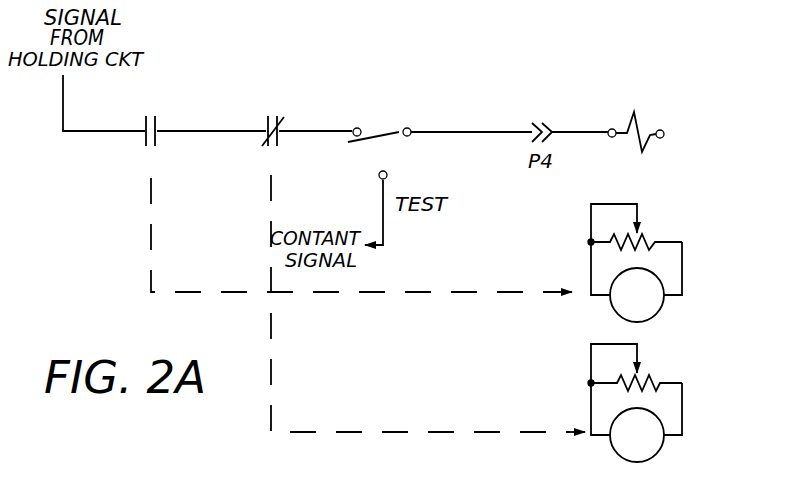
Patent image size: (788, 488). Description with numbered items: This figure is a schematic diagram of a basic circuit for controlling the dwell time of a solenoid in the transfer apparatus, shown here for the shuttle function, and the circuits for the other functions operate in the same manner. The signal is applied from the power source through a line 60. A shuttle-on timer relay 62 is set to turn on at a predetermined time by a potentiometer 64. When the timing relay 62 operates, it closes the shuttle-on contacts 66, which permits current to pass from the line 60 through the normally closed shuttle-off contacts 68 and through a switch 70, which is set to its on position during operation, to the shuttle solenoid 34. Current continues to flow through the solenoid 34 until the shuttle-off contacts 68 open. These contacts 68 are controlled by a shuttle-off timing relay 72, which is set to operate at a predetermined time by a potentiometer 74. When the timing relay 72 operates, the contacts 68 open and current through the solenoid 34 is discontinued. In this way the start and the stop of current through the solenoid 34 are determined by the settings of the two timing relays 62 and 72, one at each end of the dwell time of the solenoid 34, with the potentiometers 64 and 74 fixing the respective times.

The line 60 is at (113, 133).
The shuttle-on contacts 66 is at (158, 134).
The shuttle-off contacts 68 is at (280, 135).
The switch 70 is at (383, 137).
The shuttle solenoid 34 is at (637, 104).
The shuttle-on timer relay 62 is at (610, 303).
The potentiometer 64 is at (615, 245).
The shuttle-off timing relay 72 is at (610, 443).
The potentiometer 74 is at (618, 385).